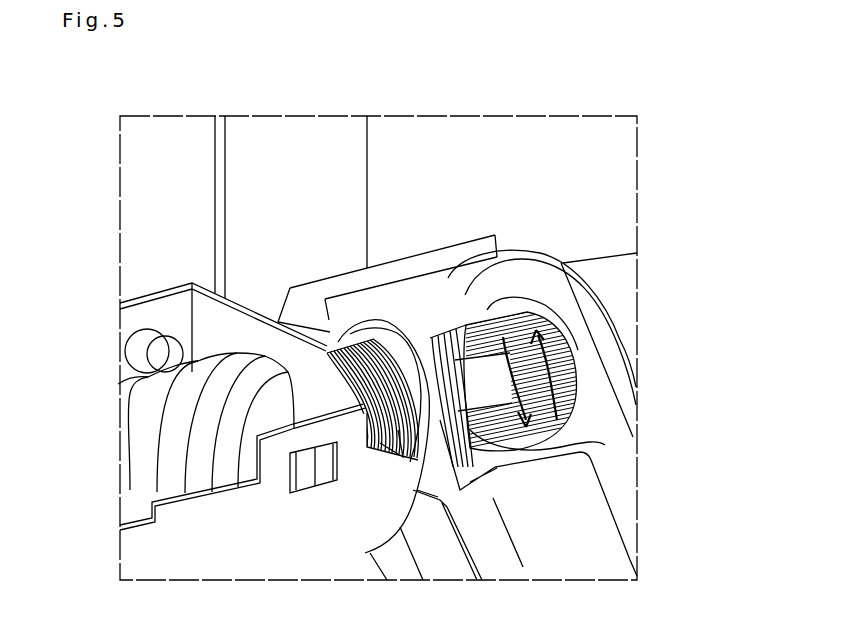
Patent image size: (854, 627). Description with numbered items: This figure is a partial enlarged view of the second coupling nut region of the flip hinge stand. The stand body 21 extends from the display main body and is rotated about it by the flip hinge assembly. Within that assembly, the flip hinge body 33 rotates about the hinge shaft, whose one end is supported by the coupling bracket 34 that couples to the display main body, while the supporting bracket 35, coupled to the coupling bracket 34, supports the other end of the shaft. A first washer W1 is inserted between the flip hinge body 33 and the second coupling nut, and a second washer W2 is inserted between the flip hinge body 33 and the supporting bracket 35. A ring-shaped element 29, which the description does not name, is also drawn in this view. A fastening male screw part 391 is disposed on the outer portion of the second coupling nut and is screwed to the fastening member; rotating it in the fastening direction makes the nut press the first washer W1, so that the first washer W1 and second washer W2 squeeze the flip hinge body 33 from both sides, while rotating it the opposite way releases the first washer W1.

The stand body 21 is at (622, 470).
The bearing ring 29 is at (455, 333).
The flip hinge body 33 is at (600, 533).
The coupling bracket 34 is at (303, 142).
The supporting bracket 35 is at (159, 307).
The fastening male screw part 391 is at (560, 385).
The first washer W1 is at (433, 323).
The second washer W2 is at (340, 318).